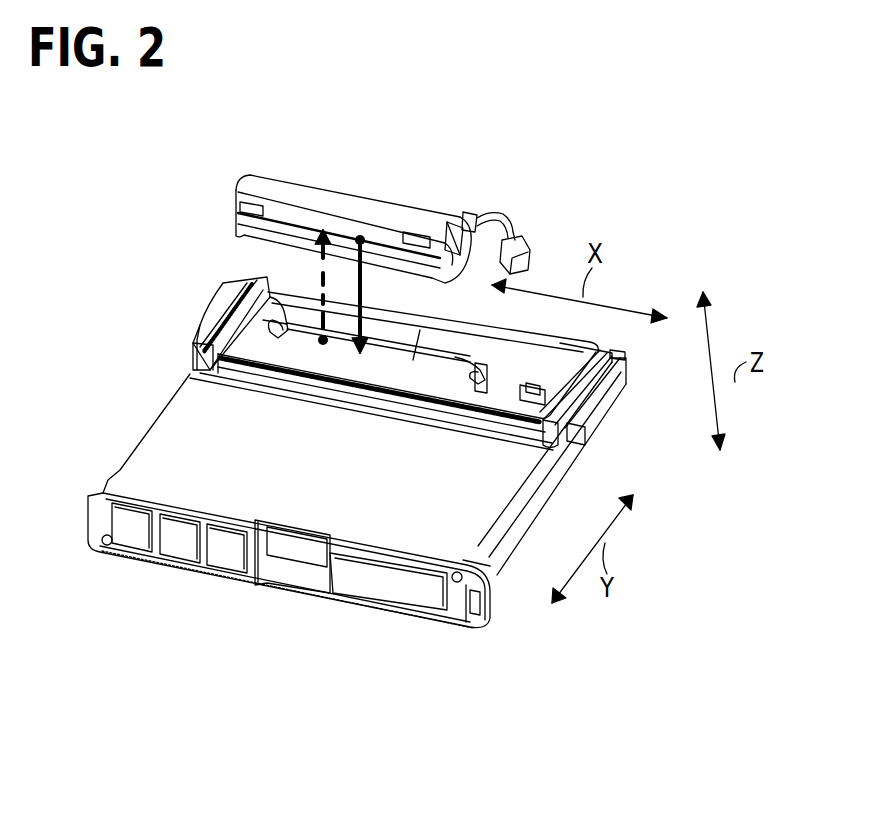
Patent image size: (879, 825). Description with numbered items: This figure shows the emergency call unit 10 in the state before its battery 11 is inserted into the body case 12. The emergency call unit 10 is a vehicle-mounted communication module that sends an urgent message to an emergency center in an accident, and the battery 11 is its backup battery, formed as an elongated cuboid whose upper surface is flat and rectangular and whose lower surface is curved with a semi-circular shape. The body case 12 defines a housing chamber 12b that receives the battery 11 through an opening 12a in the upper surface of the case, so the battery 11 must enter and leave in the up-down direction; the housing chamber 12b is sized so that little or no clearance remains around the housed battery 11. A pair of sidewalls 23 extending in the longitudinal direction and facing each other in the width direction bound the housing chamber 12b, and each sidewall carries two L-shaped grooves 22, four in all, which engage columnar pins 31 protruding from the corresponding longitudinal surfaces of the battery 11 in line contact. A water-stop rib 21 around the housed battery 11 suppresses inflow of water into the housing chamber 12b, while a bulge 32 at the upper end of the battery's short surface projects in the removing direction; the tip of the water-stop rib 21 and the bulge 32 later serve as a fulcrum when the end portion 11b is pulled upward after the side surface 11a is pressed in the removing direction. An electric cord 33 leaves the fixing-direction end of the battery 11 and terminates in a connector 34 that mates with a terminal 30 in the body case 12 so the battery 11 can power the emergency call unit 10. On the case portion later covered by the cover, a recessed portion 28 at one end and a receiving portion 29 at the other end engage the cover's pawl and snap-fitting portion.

The emergency call unit 10 is at (473, 647).
The battery 11 is at (372, 158).
The side surface 11a is at (444, 230).
The end portion 11b is at (470, 207).
The body case 12 is at (175, 392).
The opening 12a is at (575, 346).
The housing chamber 12b is at (225, 304).
The water-stop rib 21 is at (223, 352).
The grooves 22 is at (232, 287).
The sidewalls 23 is at (415, 357).
The recessed portion 28 is at (595, 393).
The receiving portion 29 is at (200, 320).
The terminal 30 is at (572, 422).
The pins 31 is at (237, 212).
The bulge 32 is at (243, 180).
The electric cord 33 is at (507, 214).
The connector 34 is at (525, 247).